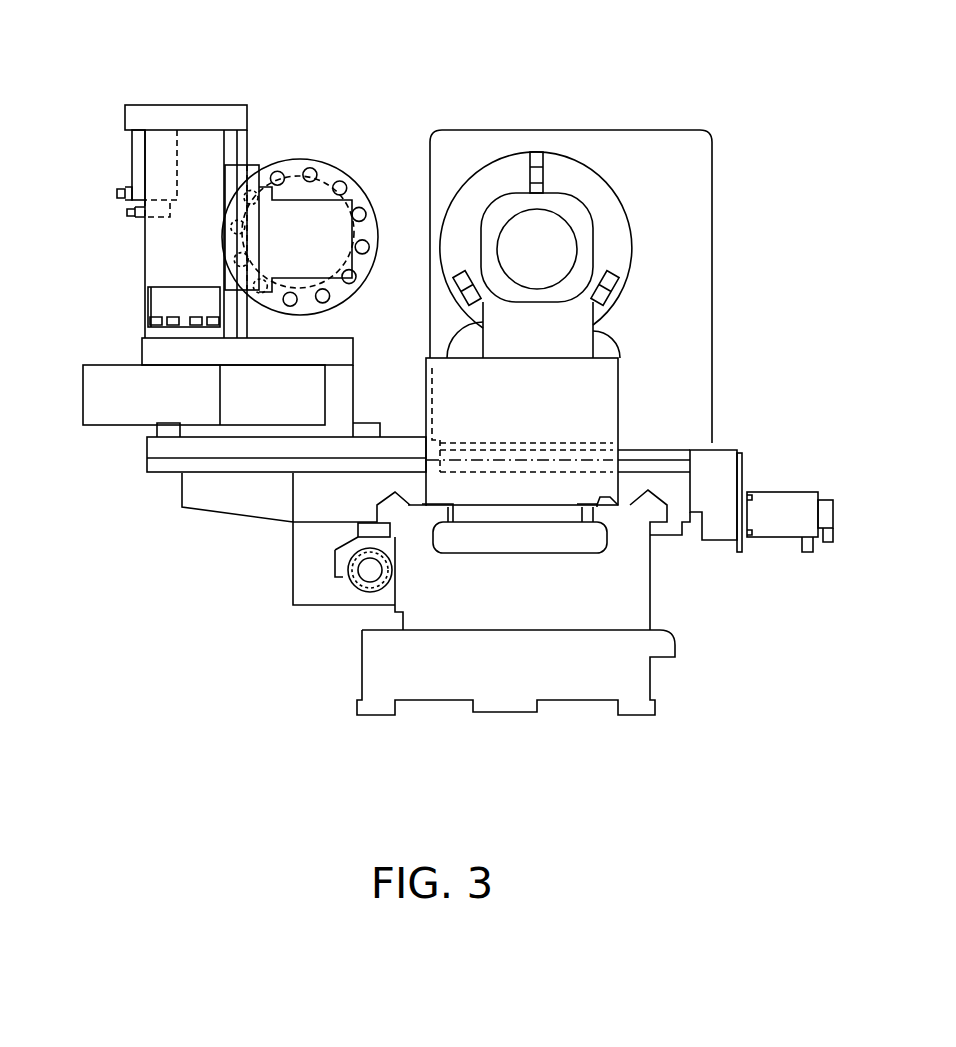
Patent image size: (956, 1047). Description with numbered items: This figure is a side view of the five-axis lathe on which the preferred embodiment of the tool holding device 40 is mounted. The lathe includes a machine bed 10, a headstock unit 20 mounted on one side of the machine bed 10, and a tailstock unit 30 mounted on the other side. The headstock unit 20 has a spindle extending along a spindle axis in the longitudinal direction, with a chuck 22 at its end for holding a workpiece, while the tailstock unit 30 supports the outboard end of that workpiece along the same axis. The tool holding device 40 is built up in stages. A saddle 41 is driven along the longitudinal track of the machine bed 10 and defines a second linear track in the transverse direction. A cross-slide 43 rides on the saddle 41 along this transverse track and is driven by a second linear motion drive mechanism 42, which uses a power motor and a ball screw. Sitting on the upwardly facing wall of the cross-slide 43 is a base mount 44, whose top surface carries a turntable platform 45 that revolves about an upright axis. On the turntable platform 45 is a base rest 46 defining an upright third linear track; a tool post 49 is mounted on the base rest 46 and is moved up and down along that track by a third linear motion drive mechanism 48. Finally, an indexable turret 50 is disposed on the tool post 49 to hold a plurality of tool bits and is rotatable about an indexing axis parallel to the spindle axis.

The machine bed 10 is at (655, 597).
The headstock unit 20 is at (597, 153).
The chuck 22 is at (613, 213).
The tailstock unit 30 is at (584, 247).
The tool holding device 40 is at (243, 95).
The saddle 41 is at (217, 470).
The second linear motion drive mechanism 42 is at (775, 505).
The cross-slide 43 is at (160, 452).
The base mount 44 is at (110, 373).
The turntable platform 45 is at (153, 348).
The base rest 46 is at (160, 240).
The third linear motion drive mechanism 48 is at (122, 148).
The tool post 49 is at (232, 173).
The indexable turret 50 is at (330, 152).